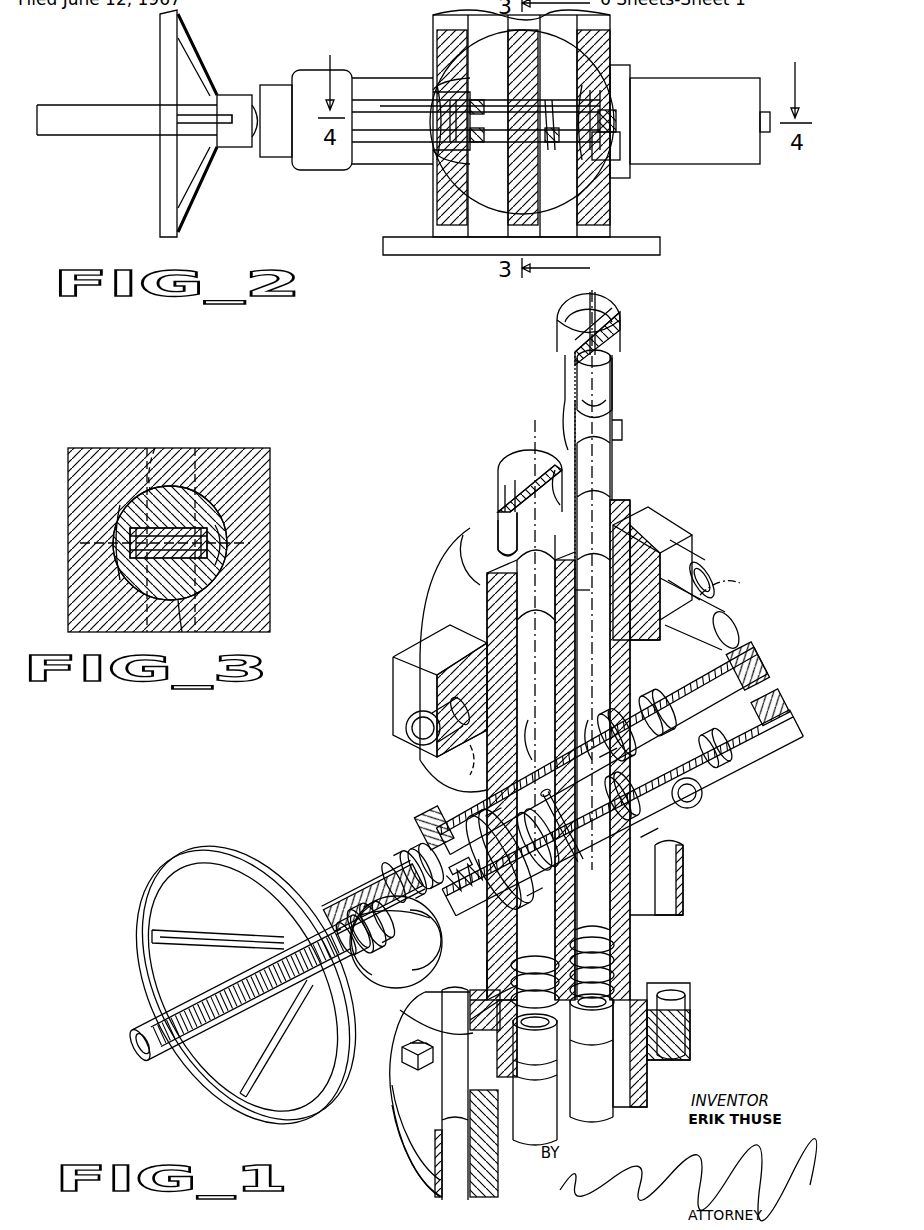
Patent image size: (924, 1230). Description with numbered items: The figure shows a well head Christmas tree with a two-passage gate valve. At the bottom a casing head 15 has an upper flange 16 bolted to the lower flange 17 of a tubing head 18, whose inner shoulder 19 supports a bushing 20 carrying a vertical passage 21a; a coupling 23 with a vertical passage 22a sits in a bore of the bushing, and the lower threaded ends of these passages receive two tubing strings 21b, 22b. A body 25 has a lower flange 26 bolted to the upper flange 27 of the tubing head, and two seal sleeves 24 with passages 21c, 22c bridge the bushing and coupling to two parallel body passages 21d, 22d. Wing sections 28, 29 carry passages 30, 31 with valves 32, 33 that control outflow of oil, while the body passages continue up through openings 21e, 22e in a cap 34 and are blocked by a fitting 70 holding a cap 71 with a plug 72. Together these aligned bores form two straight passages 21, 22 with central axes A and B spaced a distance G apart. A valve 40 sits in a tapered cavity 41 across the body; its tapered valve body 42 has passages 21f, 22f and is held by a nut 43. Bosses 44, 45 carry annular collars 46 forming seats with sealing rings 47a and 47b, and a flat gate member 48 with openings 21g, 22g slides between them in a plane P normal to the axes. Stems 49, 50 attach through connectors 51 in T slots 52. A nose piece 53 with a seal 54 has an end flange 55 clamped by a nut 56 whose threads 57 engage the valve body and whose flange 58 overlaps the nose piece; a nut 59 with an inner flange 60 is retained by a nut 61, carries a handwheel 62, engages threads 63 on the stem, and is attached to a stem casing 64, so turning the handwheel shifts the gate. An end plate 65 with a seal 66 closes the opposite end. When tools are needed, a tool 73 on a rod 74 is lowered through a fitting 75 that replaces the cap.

In FIG. 1, the casing head 15 is at (655, 1080).
In FIG. 1, the upper flange 16 is at (688, 1018).
In FIG. 1, the lower flange 17 is at (690, 1005).
In FIG. 1, the tubing head 18 is at (614, 972).
In FIG. 1, the shoulder 19 is at (478, 1058).
In FIG. 1, the bushing 20 is at (614, 958).
In FIG. 1, the passage 21 is at (512, 590).
In FIG. 1, the vertical passage 21a is at (515, 1000).
In FIG. 1, the tubing string 21b is at (552, 1108).
In FIG. 1, the passage 21c is at (510, 975).
In FIG. 2, the passage 21d is at (480, 190).
In FIG. 3, the passage 21d is at (150, 445).
In FIG. 1, the passage 21d is at (540, 606).
In FIG. 1, the opening 21e is at (500, 540).
In FIG. 2, the passage 21f is at (450, 45).
In FIG. 3, the passage 21f is at (125, 530).
In FIG. 1, the passage 21f is at (530, 740).
In FIG. 2, the opening 21g is at (450, 121).
In FIG. 1, the opening 21g is at (520, 815).
In FIG. 1, the passage 22 is at (610, 670).
In FIG. 1, the vertical passage 22a is at (614, 945).
In FIG. 1, the tubing string 22b is at (608, 1096).
In FIG. 1, the passage 22c is at (630, 910).
In FIG. 2, the passage 22d is at (585, 212).
In FIG. 1, the passage 22d is at (612, 528).
In FIG. 1, the opening 22e is at (612, 505).
In FIG. 2, the passage 22f is at (580, 180).
In FIG. 1, the passage 22f is at (590, 740).
In FIG. 2, the opening 22g is at (610, 108).
In FIG. 1, the opening 22g is at (632, 815).
In FIG. 1, the coupling 23 is at (614, 988).
In FIG. 1, the seal sleeves 24 is at (555, 958).
In FIG. 2, the body 25 is at (610, 40).
In FIG. 3, the body 25 is at (270, 468).
In FIG. 1, the body 25 is at (420, 754).
In FIG. 2, the lower flange 26 is at (660, 246).
In FIG. 1, the lower flange 26 is at (683, 872).
In FIG. 1, the upper flange 27 is at (683, 898).
In FIG. 1, the wing section 28 is at (400, 650).
In FIG. 1, the wing section 29 is at (692, 535).
In FIG. 1, the passage 30 is at (470, 690).
In FIG. 1, the passage 31 is at (650, 565).
In FIG. 1, the valve 32 is at (487, 758).
In FIG. 1, the valve 33 is at (740, 583).
In FIG. 1, the cap 34 is at (460, 531).
In FIG. 2, the valve 40 is at (400, 172).
In FIG. 3, the valve 40 is at (238, 522).
In FIG. 1, the valve 40 is at (571, 822).
In FIG. 2, the tapered cavity 41 is at (622, 82).
In FIG. 3, the tapered cavity 41 is at (215, 560).
In FIG. 1, the tapered cavity 41 is at (652, 700).
In FIG. 2, the valve body 42 is at (445, 78).
In FIG. 3, the valve body 42 is at (120, 553).
In FIG. 1, the valve body 42 is at (460, 806).
In FIG. 2, the nut 43 is at (620, 144).
In FIG. 1, the nut 43 is at (702, 793).
In FIG. 2, the boss 44 is at (410, 95).
In FIG. 3, the boss 44 is at (166, 512).
In FIG. 2, the boss 45 is at (410, 138).
In FIG. 3, the boss 45 is at (177, 620).
In FIG. 2, the annular collars 46 is at (540, 100).
In FIG. 1, the annular collars 46 is at (545, 795).
In FIG. 2, the flexible sealing ring 47a is at (552, 142).
In FIG. 2, the flexible sealing ring 47b is at (478, 142).
In FIG. 1, the gate member 48 is at (432, 822).
In FIG. 1, the stem 49 is at (340, 900).
In FIG. 2, the stem 50 is at (616, 121).
In FIG. 1, the stem 50 is at (725, 755).
In FIG. 1, the connectors 51 is at (416, 860).
In FIG. 1, the T slots 52 is at (425, 880).
In FIG. 2, the nose piece 53 is at (272, 85).
In FIG. 1, the nose piece 53 is at (345, 885).
In FIG. 1, the seal 54 is at (425, 888).
In FIG. 1, the end flange 55 is at (392, 860).
In FIG. 2, the nut 56 is at (306, 170).
In FIG. 1, the nut 56 is at (404, 988).
In FIG. 1, the threads 57 is at (430, 866).
In FIG. 1, the flange 58 is at (380, 866).
In FIG. 1, the nut 59 is at (370, 948).
In FIG. 1, the inner flange 60 is at (395, 970).
In FIG. 1, the nut 61 is at (365, 880).
In FIG. 2, the handwheel 62 is at (160, 45).
In FIG. 1, the handwheel 62 is at (140, 917).
In FIG. 1, the threads 63 is at (248, 985).
In FIG. 2, the stem casing 64 is at (72, 105).
In FIG. 1, the stem casing 64 is at (140, 1035).
In FIG. 1, the end plate 65 is at (750, 668).
In FIG. 1, the seal 66 is at (765, 700).
In FIG. 1, the fitting 70 is at (498, 530).
In FIG. 1, the cap 71 is at (500, 490).
In FIG. 1, the plug 72 is at (498, 470).
In FIG. 1, the tool 73 is at (614, 380).
In FIG. 1, the rod 74 is at (598, 297).
In FIG. 1, the fitting 75 is at (612, 350).
In FIG. 1, the axis A is at (535, 425).
In FIG. 1, the axis B is at (610, 417).
In FIG. 1, the distance G is at (590, 590).
In FIG. 3, the plane P is at (260, 541).